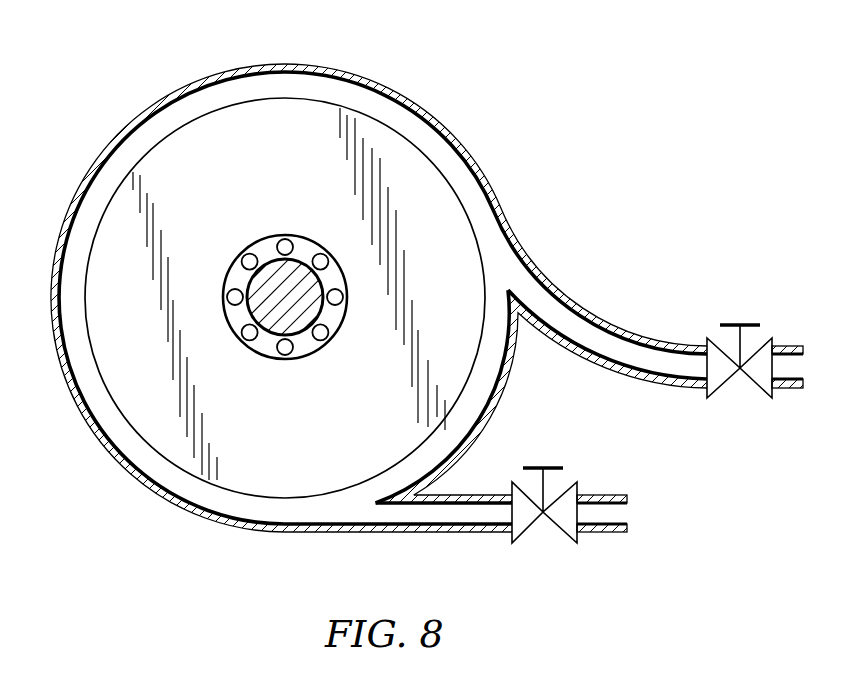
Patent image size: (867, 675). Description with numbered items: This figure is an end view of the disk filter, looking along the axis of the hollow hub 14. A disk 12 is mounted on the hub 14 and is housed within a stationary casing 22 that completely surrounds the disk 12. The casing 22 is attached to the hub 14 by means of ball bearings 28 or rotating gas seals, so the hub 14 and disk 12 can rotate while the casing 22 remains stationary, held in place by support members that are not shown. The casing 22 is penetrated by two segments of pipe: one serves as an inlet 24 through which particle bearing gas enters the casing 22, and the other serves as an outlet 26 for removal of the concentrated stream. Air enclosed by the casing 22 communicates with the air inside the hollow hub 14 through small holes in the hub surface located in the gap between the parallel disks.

The disk 12 is at (453, 192).
The hub 14 is at (315, 280).
The casing 22 is at (378, 82).
The inlet 24 is at (597, 317).
The outlet 26 is at (475, 533).
The ball bearings 28 is at (345, 322).